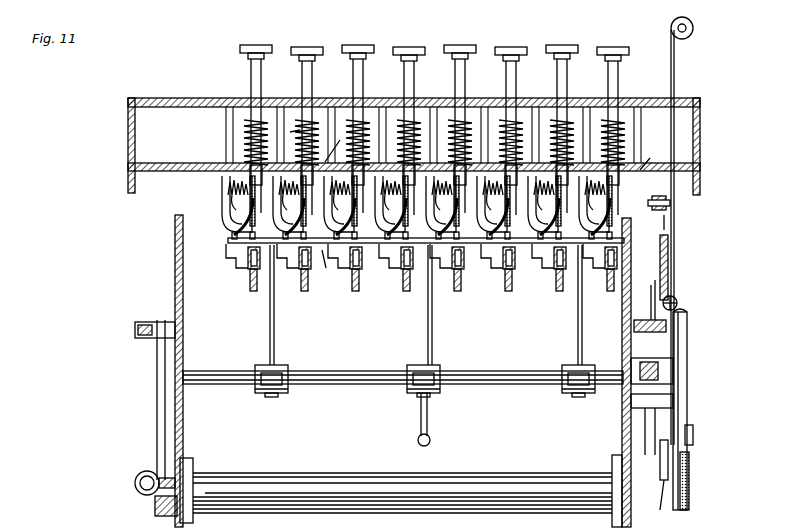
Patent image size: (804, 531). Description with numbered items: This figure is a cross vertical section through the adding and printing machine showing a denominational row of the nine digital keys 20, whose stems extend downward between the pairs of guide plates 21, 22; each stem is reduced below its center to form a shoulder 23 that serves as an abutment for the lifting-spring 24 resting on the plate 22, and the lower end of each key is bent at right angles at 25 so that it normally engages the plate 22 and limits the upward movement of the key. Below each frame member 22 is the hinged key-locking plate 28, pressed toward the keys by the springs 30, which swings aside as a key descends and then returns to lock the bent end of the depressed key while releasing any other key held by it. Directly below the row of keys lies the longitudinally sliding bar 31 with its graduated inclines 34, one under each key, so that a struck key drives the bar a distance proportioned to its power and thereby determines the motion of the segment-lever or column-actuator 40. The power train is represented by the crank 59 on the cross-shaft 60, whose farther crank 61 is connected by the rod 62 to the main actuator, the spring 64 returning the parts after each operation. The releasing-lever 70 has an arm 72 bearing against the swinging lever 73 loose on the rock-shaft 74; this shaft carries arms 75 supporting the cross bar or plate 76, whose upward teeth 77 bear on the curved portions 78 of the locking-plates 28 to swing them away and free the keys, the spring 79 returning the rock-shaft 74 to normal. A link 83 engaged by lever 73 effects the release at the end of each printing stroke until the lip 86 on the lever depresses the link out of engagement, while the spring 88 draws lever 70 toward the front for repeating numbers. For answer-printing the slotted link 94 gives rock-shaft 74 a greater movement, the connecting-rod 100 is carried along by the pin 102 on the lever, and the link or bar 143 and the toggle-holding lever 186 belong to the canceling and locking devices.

The digital keys 20 is at (302, 48).
The guide plate 21 is at (222, 92).
The guide plate 22 is at (232, 172).
The shoulders 23 is at (245, 125).
The lifting-springs 24 is at (302, 128).
The bent end 25 is at (340, 140).
The key-locking plate 28 is at (470, 212).
The springs 30 is at (275, 195).
The bar 31 is at (405, 210).
The inclines 34 is at (300, 198).
The segment-lever 40 is at (354, 272).
The crank 59 is at (650, 412).
The cross-shaft 60 is at (345, 505).
The crank 61 is at (158, 410).
The rod 62 is at (145, 338).
The spring 64 is at (135, 484).
The lever 70 is at (676, 46).
The arm 72 is at (688, 322).
The swinging lever 73 is at (688, 345).
The rock-shaft 74 is at (485, 370).
The arms 75 is at (275, 316).
The cross bar or plate 76 is at (328, 267).
The teeth 77 is at (248, 252).
The curved portion 78 is at (232, 243).
The spring 79 is at (432, 440).
The link 83 is at (690, 483).
The lip 86 is at (694, 436).
The spring 88 is at (678, 300).
The link 94 is at (663, 484).
The connecting-rod 100 is at (650, 224).
The pin 102 is at (668, 204).
The link or bar 143 is at (670, 258).
The lever 186 is at (650, 288).